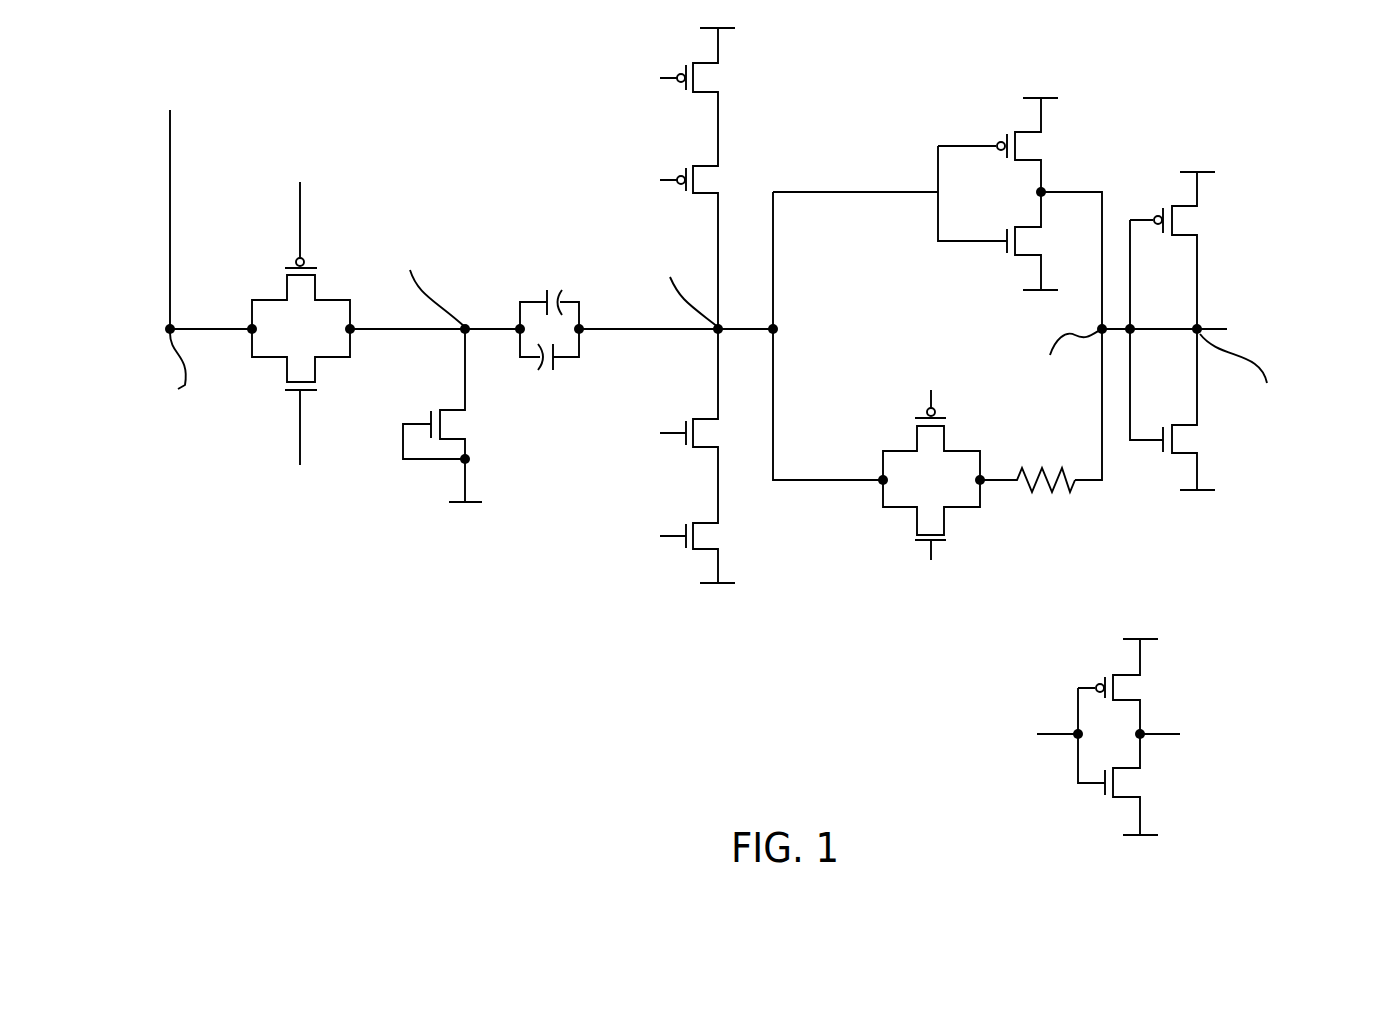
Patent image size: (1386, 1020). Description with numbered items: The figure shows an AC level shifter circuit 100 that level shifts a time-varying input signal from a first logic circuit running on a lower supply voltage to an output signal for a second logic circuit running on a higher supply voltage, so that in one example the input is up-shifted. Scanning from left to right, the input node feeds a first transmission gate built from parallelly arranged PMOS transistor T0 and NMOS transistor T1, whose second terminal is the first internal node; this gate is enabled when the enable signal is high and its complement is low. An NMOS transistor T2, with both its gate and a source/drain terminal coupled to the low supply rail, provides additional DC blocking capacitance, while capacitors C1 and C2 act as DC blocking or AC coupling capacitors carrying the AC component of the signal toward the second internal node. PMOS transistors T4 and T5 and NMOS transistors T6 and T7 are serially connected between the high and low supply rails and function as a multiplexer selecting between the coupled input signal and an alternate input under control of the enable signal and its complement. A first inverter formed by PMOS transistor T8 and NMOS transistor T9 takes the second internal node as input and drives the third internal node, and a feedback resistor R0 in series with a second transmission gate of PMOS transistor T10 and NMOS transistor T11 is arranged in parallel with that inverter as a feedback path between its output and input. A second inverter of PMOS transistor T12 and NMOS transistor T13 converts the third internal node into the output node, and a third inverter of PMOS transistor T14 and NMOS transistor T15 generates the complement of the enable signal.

The AC level shifter circuit 100 is at (790, 779).
The PMOS transistor T0 is at (297, 255).
The NMOS transistor T1 is at (299, 397).
The NMOS transistor T2 is at (435, 415).
The capacitor C1 is at (549, 295).
The capacitor C2 is at (549, 364).
The PMOS transistor T4 is at (709, 79).
The PMOS transistor T5 is at (709, 229).
The NMOS transistor T6 is at (707, 407).
The NMOS transistor T7 is at (707, 534).
The PMOS transistor T8 is at (1008, 145).
The NMOS transistor T9 is at (1008, 241).
The PMOS transistor T10 is at (918, 435).
The NMOS transistor T11 is at (918, 520).
The feedback resistor R0 is at (1027, 462).
The PMOS transistor T12 is at (1186, 250).
The NMOS transistor T13 is at (1186, 409).
The PMOS transistor T14 is at (1133, 686).
The NMOS transistor T15 is at (1133, 784).